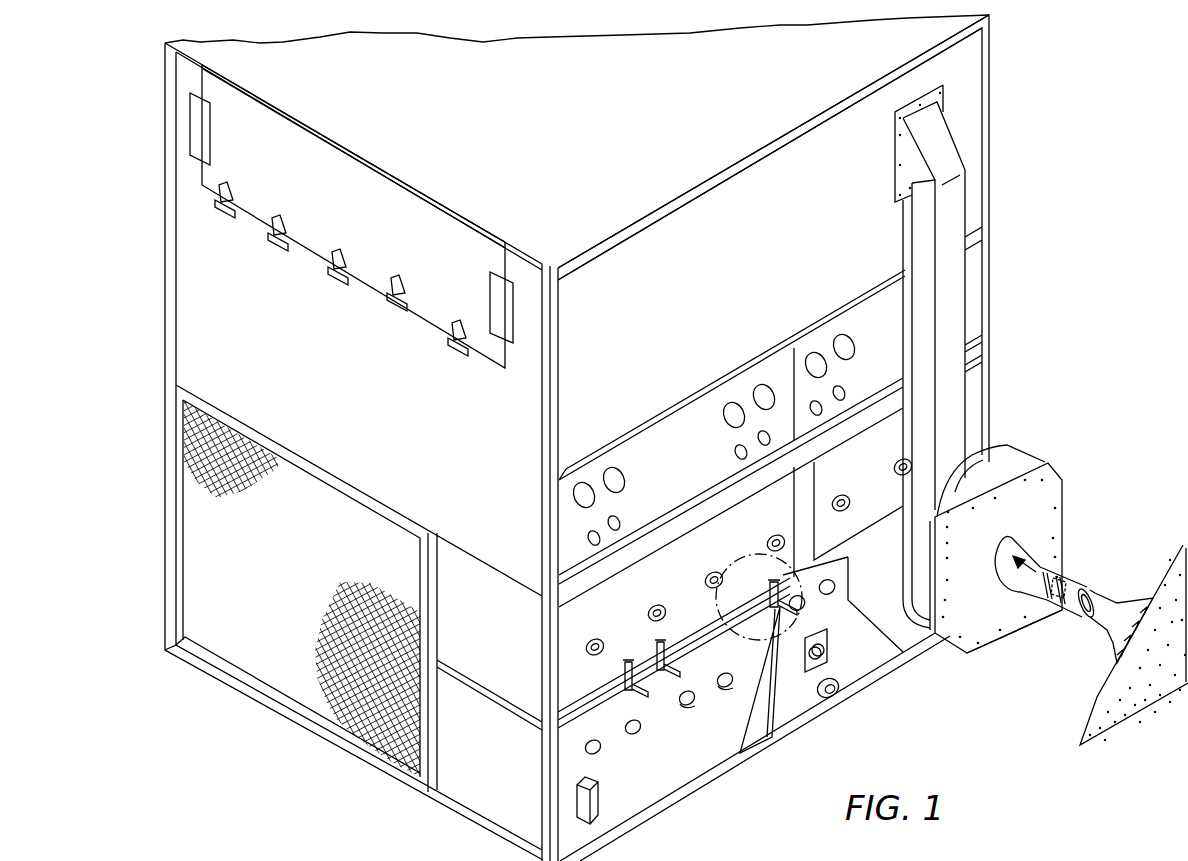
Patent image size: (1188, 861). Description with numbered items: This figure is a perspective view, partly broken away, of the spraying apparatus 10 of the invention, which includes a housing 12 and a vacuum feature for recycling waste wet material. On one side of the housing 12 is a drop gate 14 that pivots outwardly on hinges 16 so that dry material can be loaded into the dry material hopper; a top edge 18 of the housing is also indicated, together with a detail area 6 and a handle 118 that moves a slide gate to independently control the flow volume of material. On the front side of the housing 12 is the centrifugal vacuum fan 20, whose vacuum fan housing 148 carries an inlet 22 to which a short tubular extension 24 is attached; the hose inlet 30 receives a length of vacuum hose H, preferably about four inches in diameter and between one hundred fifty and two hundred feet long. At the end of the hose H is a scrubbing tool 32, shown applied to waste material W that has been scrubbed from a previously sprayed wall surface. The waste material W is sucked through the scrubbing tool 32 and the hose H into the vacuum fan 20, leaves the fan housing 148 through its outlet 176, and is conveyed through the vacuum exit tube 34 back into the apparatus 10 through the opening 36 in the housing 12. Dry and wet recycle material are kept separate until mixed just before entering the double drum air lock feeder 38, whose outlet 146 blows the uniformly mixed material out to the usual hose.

The spraying apparatus 10 is at (1010, 188).
The housing 12 is at (982, 162).
The drop gate 14 is at (340, 221).
The hinges 16 is at (388, 290).
The top rail 18 is at (770, 142).
The vacuum fan 20 is at (1048, 469).
The inlet 22 is at (1008, 546).
The tubular extension 24 is at (1035, 557).
The hose inlet 30 is at (1080, 577).
The scrubbing tool 32 is at (1128, 604).
The vacuum exit tube 34 is at (958, 258).
The opening 36 is at (896, 168).
The double drum air lock feeder 38 is at (805, 702).
The clamp assembly detail 6 is at (745, 565).
The handle 118 is at (810, 608).
The outlet 146 is at (845, 692).
The vacuum fan housing 148 is at (975, 652).
The outlet 176 is at (953, 547).
The hose H is at (1068, 615).
The waste material W is at (1122, 706).